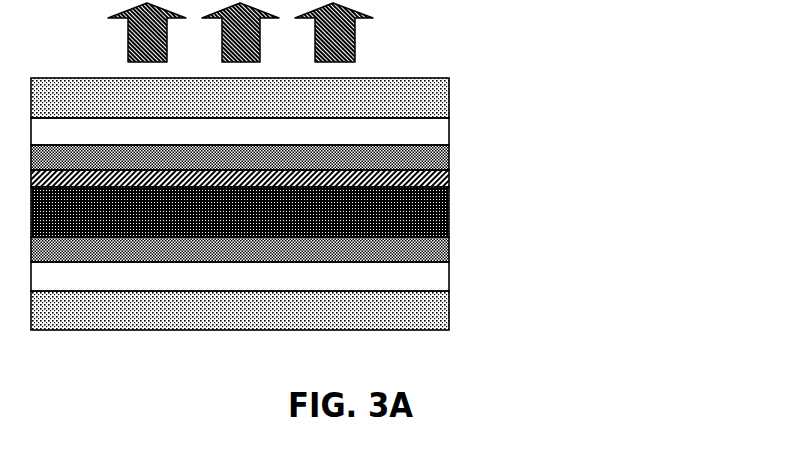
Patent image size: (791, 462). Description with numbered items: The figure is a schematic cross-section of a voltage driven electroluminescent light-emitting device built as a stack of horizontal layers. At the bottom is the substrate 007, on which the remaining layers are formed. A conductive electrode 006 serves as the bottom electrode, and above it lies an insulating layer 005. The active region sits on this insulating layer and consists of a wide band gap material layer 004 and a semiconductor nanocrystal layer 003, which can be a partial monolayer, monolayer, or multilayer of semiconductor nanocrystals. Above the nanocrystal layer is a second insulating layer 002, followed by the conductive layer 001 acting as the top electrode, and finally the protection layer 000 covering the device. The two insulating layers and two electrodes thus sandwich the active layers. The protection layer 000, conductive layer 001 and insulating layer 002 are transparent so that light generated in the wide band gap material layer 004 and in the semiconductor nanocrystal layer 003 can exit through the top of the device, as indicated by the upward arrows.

The protection layer 000 is at (293, 98).
The conductive layer 001 is at (325, 131).
The insulating layer 002 is at (306, 157).
The semiconductor nanocrystal layer 003 is at (342, 182).
The wide band gap material layer 004 is at (372, 212).
The insulating layer 005 is at (306, 249).
The conductive electrode 006 is at (340, 279).
The substrate 007 is at (308, 310).